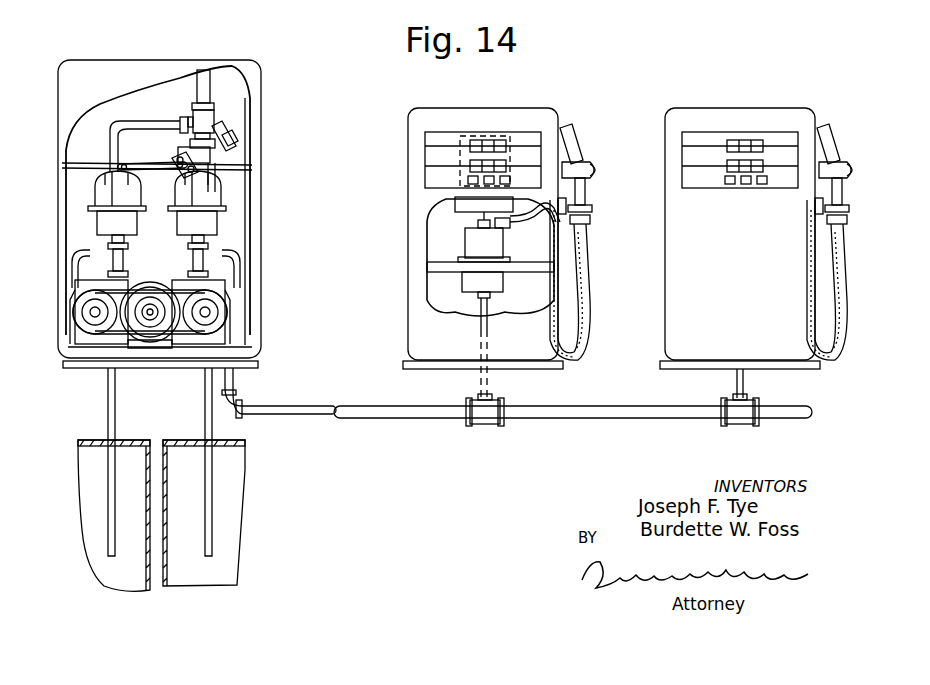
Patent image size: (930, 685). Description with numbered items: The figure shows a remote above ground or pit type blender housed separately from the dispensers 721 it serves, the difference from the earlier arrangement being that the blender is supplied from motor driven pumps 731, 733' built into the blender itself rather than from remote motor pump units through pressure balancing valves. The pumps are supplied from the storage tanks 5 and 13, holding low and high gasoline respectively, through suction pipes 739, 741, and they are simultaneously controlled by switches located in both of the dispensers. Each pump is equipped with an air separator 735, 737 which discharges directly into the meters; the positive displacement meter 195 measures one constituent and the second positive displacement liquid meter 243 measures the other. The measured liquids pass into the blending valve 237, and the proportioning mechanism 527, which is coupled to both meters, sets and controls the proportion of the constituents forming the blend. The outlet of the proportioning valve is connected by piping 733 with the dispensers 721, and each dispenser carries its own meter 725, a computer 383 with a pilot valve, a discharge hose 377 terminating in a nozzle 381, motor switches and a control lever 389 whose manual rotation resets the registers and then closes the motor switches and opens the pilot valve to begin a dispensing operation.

The storage tank 5 is at (130, 446).
The storage tank 13 is at (226, 476).
The positive displacement meter 195 is at (113, 193).
The blending valve 237 is at (203, 116).
The second positive displacement liquid meter 243 is at (200, 193).
The discharge hose 377 is at (590, 282).
The nozzle 381 is at (582, 192).
The computer 383 is at (505, 158).
The control lever 389 is at (584, 162).
The proportioning mechanism 527 is at (143, 165).
The dispenser 721 is at (514, 114).
The meter 725 is at (478, 242).
The motor driven pump 731 is at (113, 294).
The piping 733 is at (453, 402).
The motor driven pump 733' is at (247, 304).
The air separator 735 is at (92, 338).
The air separator 737 is at (243, 333).
The suction pipe 739 is at (110, 408).
The suction pipe 741 is at (209, 385).